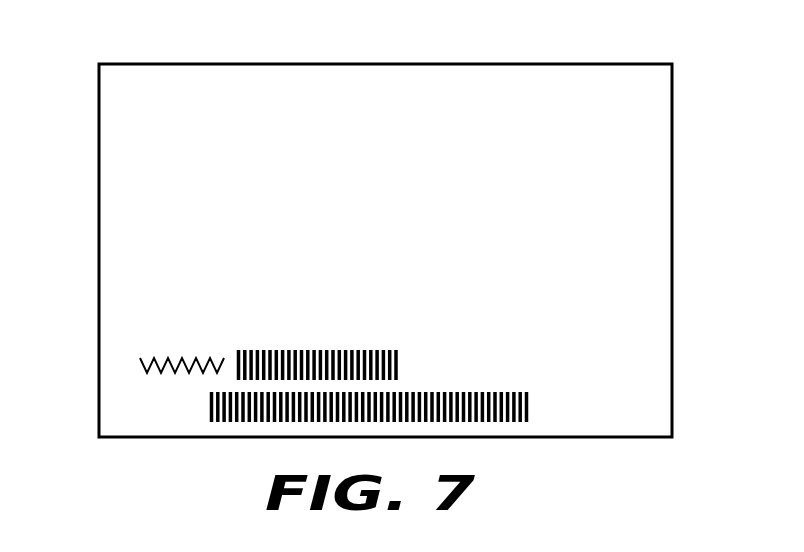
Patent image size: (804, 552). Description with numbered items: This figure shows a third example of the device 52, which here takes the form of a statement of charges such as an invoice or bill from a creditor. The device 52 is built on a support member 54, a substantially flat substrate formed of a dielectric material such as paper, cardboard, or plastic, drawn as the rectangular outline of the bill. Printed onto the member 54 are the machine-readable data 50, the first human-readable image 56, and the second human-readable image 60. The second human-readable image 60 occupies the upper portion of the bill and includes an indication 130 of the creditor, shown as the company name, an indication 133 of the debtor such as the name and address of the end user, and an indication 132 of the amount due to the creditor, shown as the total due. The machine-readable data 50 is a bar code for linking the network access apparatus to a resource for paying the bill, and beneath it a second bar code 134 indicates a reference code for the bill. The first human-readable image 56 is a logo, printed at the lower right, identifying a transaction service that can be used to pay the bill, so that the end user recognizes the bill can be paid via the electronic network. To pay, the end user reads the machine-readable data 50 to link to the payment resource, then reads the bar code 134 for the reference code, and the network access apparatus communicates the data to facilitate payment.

The machine-readable data 50 is at (236, 350).
The device 52 is at (205, 483).
The support member 54 is at (672, 82).
The first human-readable image 56 is at (645, 408).
The second human-readable image 60 is at (176, 84).
The indication of the creditor 130 is at (272, 83).
The indication of an amount due 132 is at (355, 282).
The indication of the debtor 133 is at (168, 158).
The bar code 134 is at (528, 408).